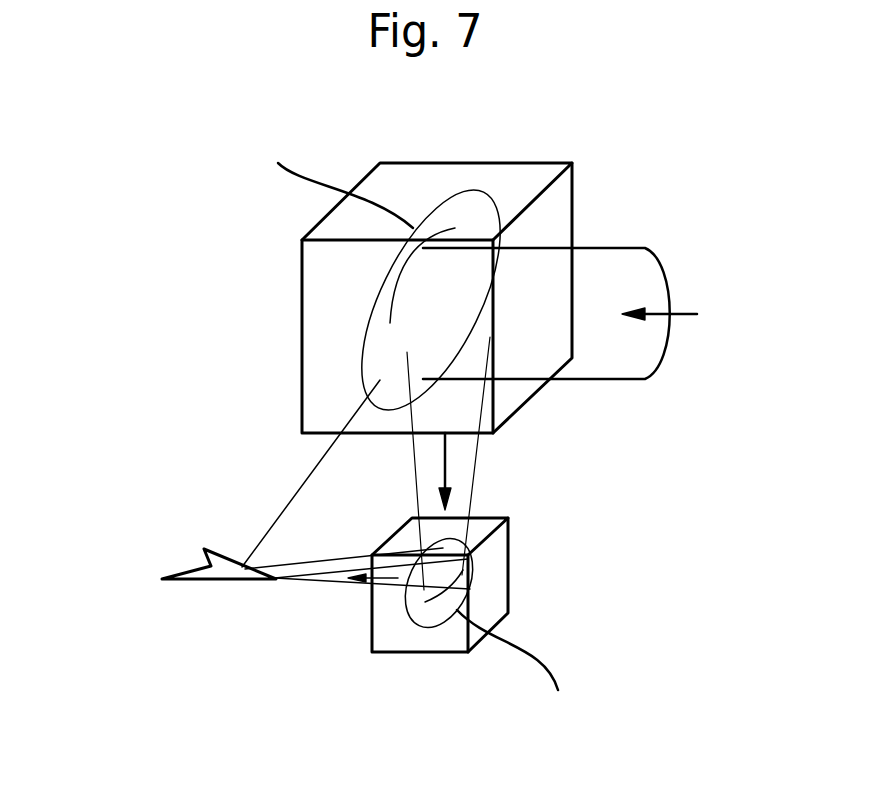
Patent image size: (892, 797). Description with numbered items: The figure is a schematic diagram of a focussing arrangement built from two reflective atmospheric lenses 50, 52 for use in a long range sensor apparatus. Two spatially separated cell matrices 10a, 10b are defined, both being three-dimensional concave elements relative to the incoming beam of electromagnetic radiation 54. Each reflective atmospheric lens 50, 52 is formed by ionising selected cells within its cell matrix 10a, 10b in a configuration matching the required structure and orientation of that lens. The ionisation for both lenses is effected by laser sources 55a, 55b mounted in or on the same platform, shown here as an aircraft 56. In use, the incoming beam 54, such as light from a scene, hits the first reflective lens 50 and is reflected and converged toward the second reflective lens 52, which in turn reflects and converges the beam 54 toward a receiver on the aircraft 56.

The cell matrix 10a is at (320, 293).
The cell matrix 10b is at (502, 538).
The reflective atmospheric lens 50 is at (443, 230).
The reflective atmospheric lens 52 is at (462, 576).
The incoming beam of electromagnetic radiation 54 is at (643, 258).
The laser source 55a is at (309, 474).
The laser source 55b is at (275, 566).
The aircraft 56 is at (182, 577).